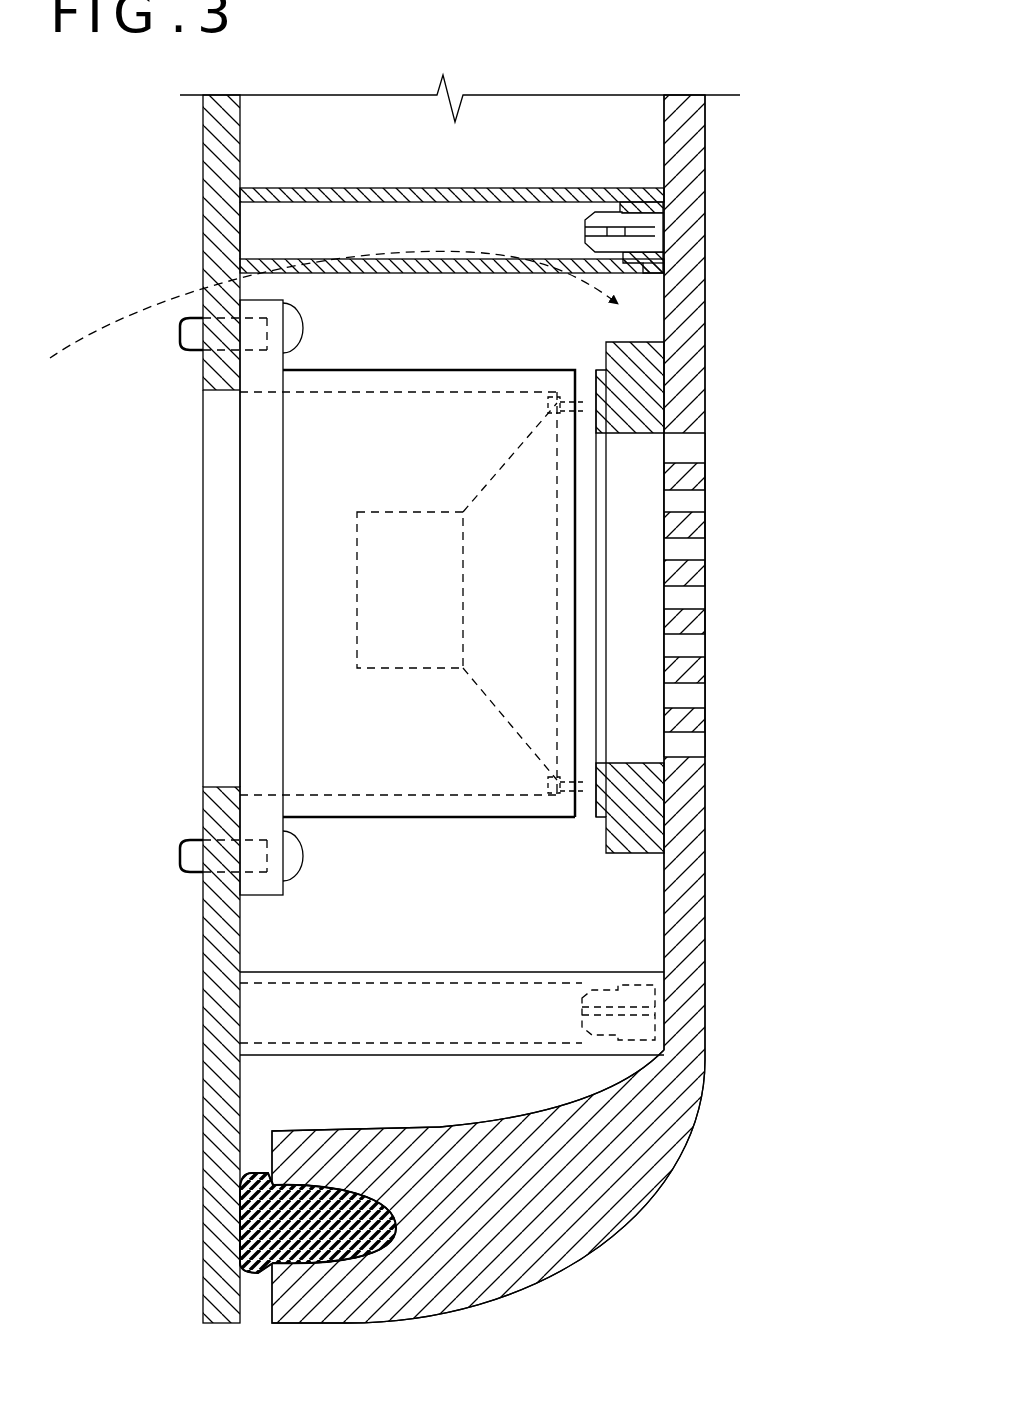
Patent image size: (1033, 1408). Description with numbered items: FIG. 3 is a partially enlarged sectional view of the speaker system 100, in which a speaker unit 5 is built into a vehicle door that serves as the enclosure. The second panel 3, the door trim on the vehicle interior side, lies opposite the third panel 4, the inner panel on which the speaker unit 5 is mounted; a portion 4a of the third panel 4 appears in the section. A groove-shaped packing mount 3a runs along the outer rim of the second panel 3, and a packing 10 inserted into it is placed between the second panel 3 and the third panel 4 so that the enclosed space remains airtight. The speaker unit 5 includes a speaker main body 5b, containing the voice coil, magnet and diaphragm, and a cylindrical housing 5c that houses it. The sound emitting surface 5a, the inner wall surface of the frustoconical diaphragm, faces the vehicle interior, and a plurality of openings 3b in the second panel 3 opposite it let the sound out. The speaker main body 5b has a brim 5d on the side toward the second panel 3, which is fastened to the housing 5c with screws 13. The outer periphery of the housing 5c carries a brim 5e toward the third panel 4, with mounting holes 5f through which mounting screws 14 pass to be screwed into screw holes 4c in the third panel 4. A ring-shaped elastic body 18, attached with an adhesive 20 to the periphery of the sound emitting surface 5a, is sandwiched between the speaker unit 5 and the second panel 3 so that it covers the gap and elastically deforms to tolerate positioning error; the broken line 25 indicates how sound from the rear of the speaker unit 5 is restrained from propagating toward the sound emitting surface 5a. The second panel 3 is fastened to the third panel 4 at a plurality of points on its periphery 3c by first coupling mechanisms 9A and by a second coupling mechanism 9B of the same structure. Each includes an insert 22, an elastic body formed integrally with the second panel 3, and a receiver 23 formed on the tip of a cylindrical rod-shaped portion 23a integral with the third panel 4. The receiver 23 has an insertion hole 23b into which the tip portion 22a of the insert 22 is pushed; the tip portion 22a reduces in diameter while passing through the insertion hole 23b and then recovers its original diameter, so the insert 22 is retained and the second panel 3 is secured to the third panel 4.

The speaker system 100 is at (822, 148).
The second panel 3 is at (692, 125).
The packing mount 3a is at (350, 1290).
The openings 3b is at (690, 586).
The periphery 3c is at (700, 1072).
The third panel 4 is at (205, 137).
The cover plate portion 4a is at (210, 580).
The screw holes 4c is at (205, 375).
The speaker unit 5 is at (290, 628).
The sound emitting surface 5a is at (517, 610).
The speaker main body 5b is at (397, 668).
The housing 5c is at (465, 805).
The brim 5d is at (590, 518).
The brim 5e is at (260, 720).
The mounting holes 5f is at (262, 352).
The first coupling mechanisms 9A is at (488, 970).
The second coupling mechanism 9B is at (304, 186).
The packing 10 is at (237, 1222).
The screws 13 is at (548, 398).
The mounting screws 14 is at (303, 327).
The elastic body 18 is at (663, 378).
The adhesive 20 is at (600, 372).
The insert 22 is at (658, 232).
The tip portion 22a is at (585, 230).
The receiver 23 is at (630, 186).
The cylindrical rod-shaped portion 23a is at (398, 196).
The insertion hole 23b is at (643, 268).
The broken line 25 is at (143, 300).